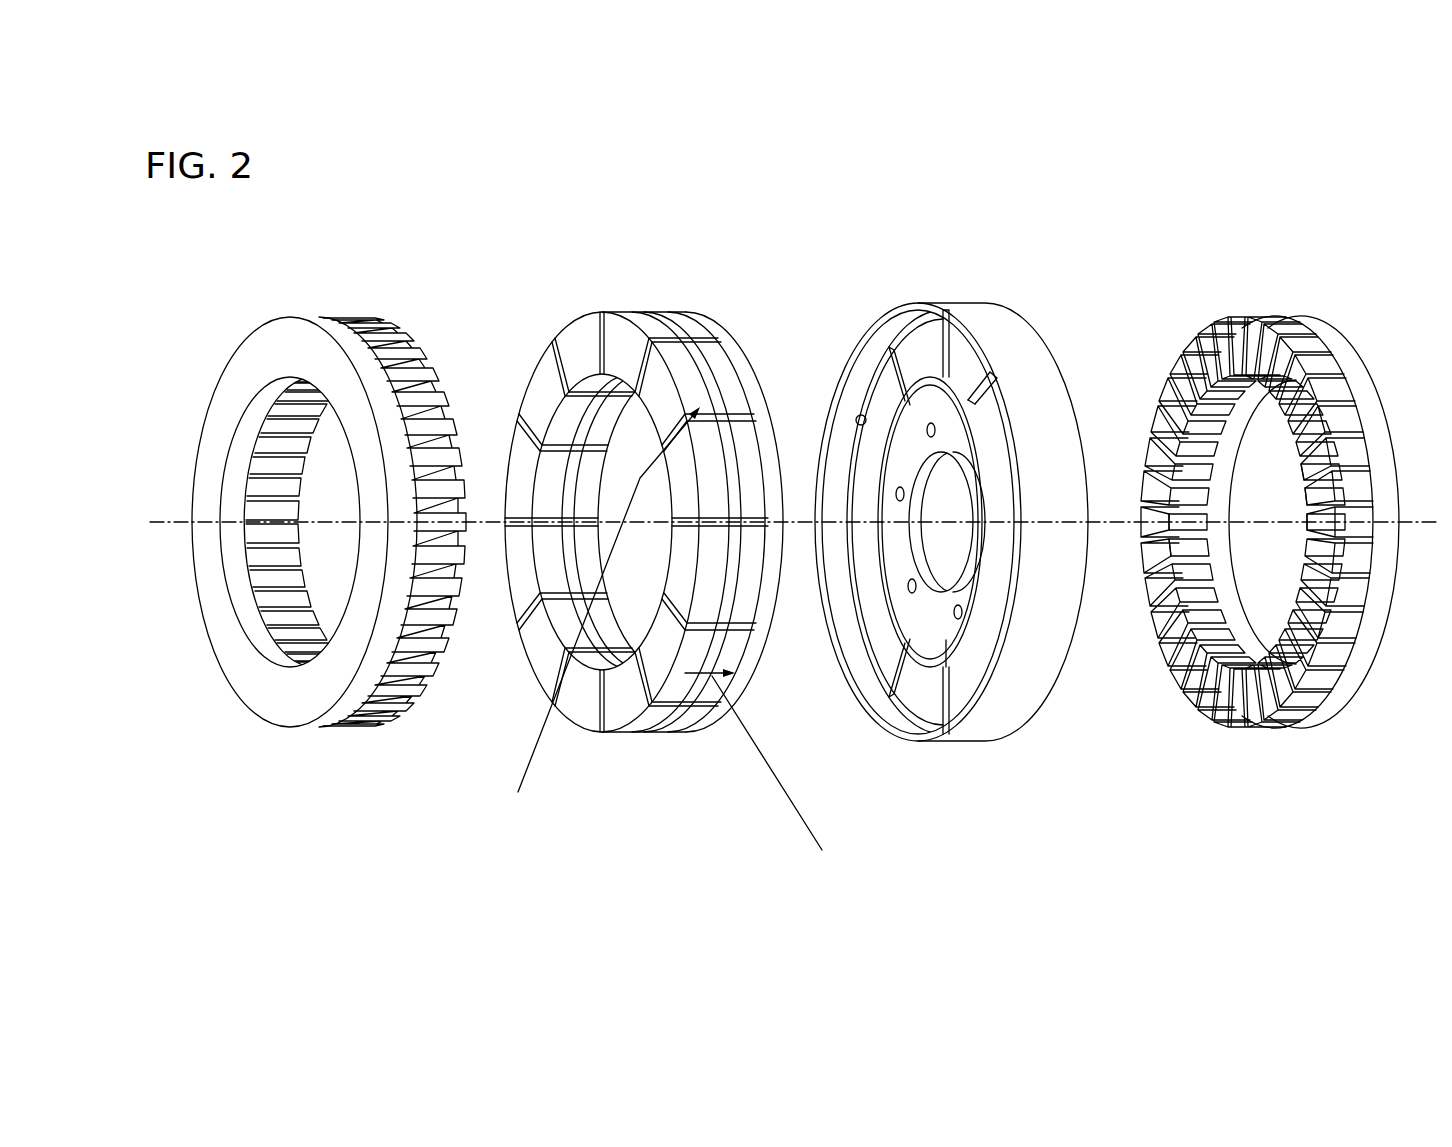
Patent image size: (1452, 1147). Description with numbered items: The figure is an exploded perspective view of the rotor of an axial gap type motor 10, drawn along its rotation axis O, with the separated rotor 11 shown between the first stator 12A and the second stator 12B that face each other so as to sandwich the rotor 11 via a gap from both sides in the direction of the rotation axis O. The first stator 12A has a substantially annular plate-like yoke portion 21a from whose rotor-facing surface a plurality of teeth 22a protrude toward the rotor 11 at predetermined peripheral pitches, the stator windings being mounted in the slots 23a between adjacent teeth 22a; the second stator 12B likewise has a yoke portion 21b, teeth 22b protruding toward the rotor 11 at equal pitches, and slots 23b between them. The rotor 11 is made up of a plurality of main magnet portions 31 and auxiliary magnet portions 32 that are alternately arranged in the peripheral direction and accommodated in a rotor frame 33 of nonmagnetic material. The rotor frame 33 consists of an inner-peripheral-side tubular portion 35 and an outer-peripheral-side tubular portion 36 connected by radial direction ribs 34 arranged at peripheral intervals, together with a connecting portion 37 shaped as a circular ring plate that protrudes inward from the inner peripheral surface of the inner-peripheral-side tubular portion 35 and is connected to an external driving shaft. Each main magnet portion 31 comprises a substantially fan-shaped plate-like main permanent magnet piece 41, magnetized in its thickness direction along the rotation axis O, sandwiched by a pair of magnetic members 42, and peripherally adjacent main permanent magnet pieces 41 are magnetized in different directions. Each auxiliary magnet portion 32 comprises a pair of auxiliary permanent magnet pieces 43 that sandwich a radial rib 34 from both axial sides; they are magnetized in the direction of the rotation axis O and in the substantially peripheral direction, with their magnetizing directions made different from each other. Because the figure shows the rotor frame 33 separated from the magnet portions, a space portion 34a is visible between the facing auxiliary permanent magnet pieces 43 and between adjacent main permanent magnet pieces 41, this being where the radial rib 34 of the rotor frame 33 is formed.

The axial gap type motor 10 is at (1330, 240).
The rotor 11 is at (795, 457).
The first stator 12A is at (340, 509).
The second stator 12B is at (1294, 505).
The yoke portion 21a is at (326, 726).
The teeth 22a is at (411, 695).
The slots 23a is at (438, 655).
The yoke portion 21b is at (1347, 690).
The teeth 22b is at (1323, 700).
The slots 23b is at (1333, 657).
The main magnet portion 31 is at (733, 350).
The auxiliary magnet portion 32 is at (725, 333).
The rotor frame 33 is at (954, 486).
The radial direction ribs 34 is at (940, 352).
The space portion 34a is at (860, 630).
The inner-peripheral-side tubular portion 35 is at (1007, 332).
The outer-peripheral-side tubular portion 36 is at (982, 420).
The connecting portion 37 is at (975, 396).
The main permanent magnet piece 41 is at (703, 337).
The magnetic members 42 is at (691, 388).
The auxiliary permanent magnet pieces 43 is at (713, 410).
The rotation axis O is at (158, 525).